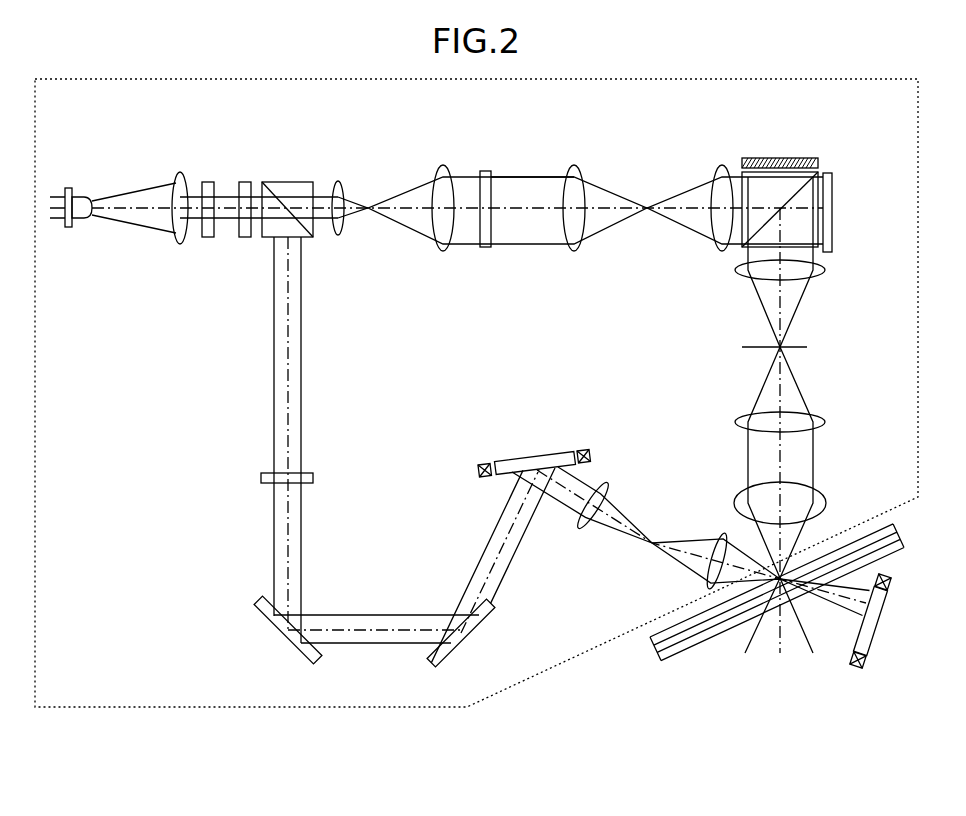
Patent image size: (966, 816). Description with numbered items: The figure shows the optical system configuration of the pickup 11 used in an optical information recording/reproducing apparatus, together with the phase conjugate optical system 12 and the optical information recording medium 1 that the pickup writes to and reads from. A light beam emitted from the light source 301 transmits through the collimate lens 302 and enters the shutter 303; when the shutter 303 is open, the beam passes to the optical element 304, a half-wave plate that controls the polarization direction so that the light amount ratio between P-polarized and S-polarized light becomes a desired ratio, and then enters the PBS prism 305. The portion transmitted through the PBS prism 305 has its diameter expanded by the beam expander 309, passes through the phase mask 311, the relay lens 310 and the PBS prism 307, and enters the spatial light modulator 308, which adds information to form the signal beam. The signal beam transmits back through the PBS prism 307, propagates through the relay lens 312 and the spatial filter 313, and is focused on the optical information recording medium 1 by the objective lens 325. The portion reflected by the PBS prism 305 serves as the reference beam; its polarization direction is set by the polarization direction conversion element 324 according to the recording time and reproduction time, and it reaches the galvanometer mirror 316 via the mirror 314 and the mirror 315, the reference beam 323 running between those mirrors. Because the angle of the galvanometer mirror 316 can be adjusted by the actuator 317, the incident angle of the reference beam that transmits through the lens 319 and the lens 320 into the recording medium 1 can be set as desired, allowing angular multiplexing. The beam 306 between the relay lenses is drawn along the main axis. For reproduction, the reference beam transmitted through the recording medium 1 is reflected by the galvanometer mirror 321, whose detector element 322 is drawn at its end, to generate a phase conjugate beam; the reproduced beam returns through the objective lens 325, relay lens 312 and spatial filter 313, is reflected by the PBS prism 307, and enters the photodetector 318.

The optical information recording medium 1 is at (688, 652).
The pickup 11 is at (122, 707).
The phase conjugate optical system 12 is at (886, 710).
The light source 301 is at (85, 196).
The collimate lens 302 is at (181, 170).
The shutter 303 is at (208, 182).
The optical element 304 is at (245, 170).
The PBS prism 305 is at (289, 182).
The light beam 306 is at (522, 183).
The PBS prism 307 is at (755, 190).
The spatial light modulator 308 is at (790, 158).
The beam expander 309 is at (443, 156).
The relay lens 310 is at (574, 156).
The phase mask 311 is at (485, 250).
The relay lens 312 is at (723, 272).
The spatial filter 313 is at (808, 347).
The mirror 314 is at (277, 640).
The mirror 315 is at (467, 645).
The galvanometer mirror 316 is at (550, 453).
The actuator 317 is at (481, 463).
The photodetector 318 is at (836, 210).
The lens 319 is at (585, 522).
The lens 320 is at (722, 546).
The galvanometer mirror 321 is at (878, 625).
The detector element 322 is at (855, 670).
The light beam 323 is at (378, 622).
The polarization direction conversion element 324 is at (258, 478).
The objective lens 325 is at (822, 505).